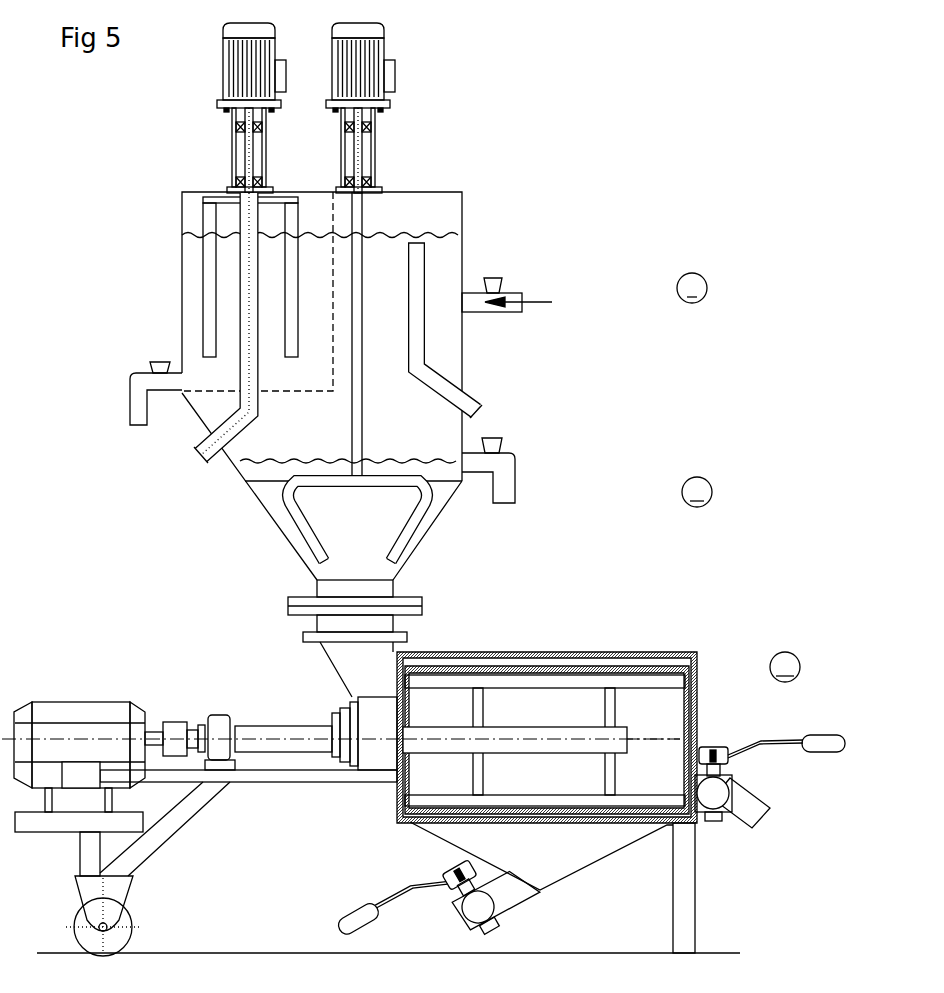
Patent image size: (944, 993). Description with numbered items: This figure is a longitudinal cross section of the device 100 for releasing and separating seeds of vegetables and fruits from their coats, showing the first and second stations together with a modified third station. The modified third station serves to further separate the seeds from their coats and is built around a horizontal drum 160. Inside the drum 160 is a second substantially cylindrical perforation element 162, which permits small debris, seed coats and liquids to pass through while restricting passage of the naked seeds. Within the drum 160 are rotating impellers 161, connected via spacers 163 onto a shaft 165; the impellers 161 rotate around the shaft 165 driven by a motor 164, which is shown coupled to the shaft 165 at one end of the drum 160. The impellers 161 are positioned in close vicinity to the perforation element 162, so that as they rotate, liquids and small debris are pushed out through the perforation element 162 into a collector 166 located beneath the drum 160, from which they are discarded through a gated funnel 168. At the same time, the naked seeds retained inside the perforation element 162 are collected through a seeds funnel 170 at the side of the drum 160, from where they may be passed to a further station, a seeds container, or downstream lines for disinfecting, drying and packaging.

The device 100 is at (423, 508).
The horizontal drum 160 is at (591, 667).
The rotating impellers 161 is at (503, 682).
The second substantially cylindrical perforation element 162 is at (590, 700).
The spacers 163 is at (477, 703).
The motor 164 is at (52, 715).
The shaft 165 is at (576, 750).
The collector 166 is at (455, 832).
The gated funnel 168 is at (515, 895).
The seeds funnel 170 is at (755, 815).